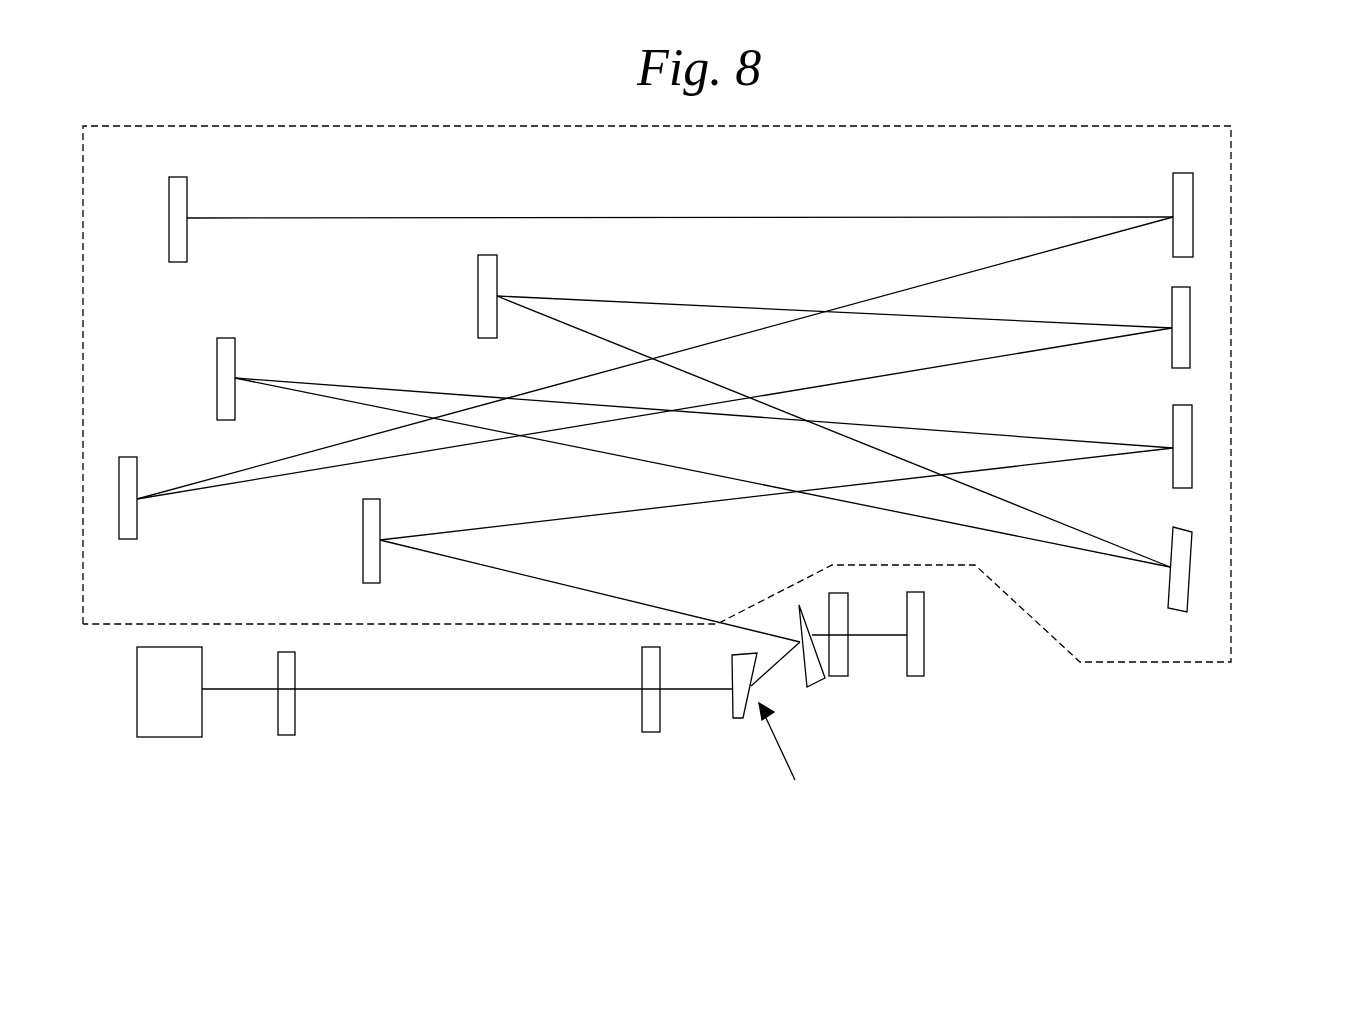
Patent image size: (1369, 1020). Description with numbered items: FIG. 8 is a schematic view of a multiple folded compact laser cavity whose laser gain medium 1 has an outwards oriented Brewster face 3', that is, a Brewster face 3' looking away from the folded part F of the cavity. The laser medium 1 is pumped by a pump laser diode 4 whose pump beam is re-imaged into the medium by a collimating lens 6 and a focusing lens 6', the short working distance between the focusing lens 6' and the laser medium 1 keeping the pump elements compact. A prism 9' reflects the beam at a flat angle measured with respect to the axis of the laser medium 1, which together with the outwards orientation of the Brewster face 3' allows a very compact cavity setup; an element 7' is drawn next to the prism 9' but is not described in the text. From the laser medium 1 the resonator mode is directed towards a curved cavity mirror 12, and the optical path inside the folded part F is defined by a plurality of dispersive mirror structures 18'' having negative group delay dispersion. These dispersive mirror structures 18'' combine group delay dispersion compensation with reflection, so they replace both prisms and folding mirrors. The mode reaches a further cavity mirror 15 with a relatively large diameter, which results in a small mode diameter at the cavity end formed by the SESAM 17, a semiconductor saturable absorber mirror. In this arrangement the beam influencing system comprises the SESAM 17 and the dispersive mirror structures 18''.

The SESAM 17 is at (248, 208).
The cavity mirror 15 is at (1243, 221).
The curved cavity mirror 12 is at (432, 587).
The pump laser diode 4 is at (222, 729).
The collimating lens 6 is at (340, 706).
The focusing lens 6' is at (604, 720).
The detector 7' is at (973, 653).
The laser gain medium 1 is at (695, 735).
The prism 9' is at (878, 685).
The Brewster face 3' is at (793, 760).
The dispersive mirror structures 18'' is at (729, 432).
The folded part F is at (657, 450).